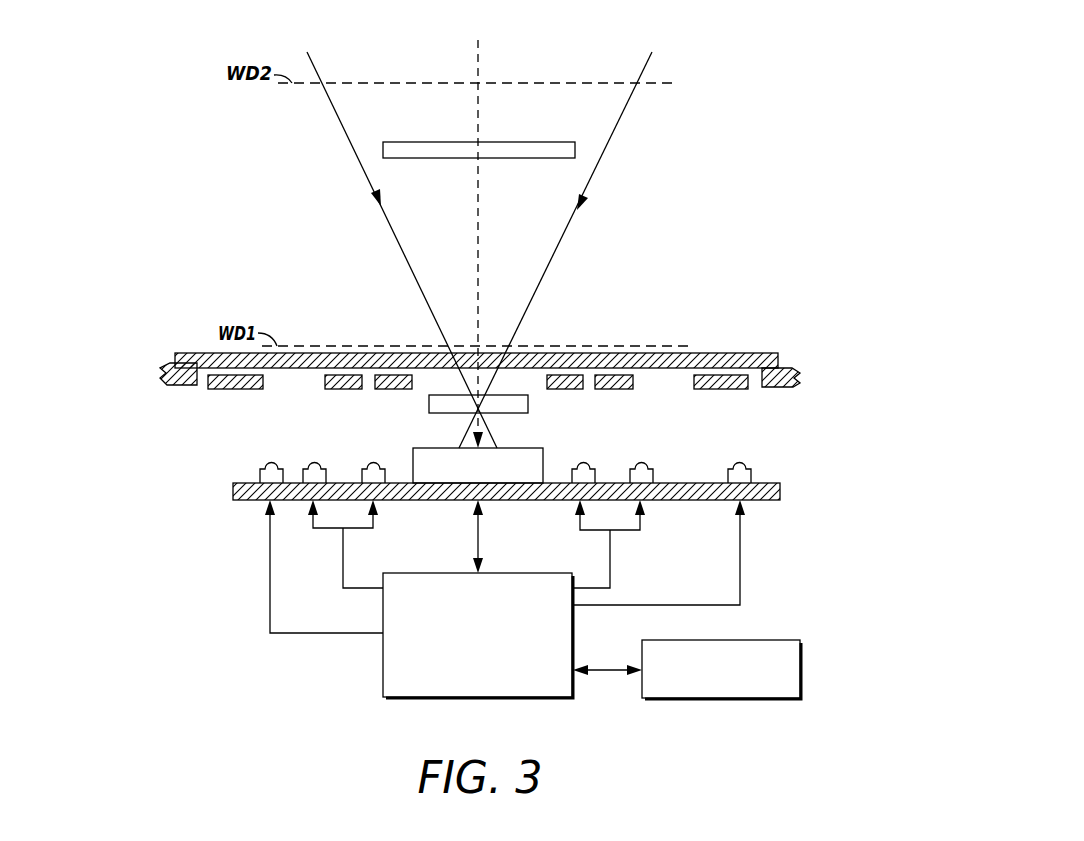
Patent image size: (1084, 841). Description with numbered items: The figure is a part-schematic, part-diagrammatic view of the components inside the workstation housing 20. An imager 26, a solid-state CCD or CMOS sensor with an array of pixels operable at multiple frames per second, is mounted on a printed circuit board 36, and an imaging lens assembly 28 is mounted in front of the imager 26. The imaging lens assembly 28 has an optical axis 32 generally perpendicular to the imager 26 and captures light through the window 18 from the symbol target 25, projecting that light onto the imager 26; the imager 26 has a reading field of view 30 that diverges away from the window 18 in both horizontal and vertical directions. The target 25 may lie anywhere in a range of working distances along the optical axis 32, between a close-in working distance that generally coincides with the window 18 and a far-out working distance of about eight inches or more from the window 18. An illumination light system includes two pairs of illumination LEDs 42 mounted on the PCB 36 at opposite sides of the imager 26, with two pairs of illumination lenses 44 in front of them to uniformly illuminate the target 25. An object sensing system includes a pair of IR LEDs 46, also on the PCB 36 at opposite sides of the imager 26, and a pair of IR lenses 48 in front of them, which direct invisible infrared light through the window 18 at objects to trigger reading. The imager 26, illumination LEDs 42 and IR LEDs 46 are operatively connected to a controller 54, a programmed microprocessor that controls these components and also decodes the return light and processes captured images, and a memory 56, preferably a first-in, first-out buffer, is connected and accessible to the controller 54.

The window 18 is at (190, 353).
The housing 20 is at (802, 372).
The symbol target 25 is at (541, 142).
The imager 26 is at (441, 448).
The imaging lens assembly 28 is at (438, 395).
The reading field of view 30 is at (619, 124).
The optical axis 32 is at (480, 58).
The printed circuit board 36 is at (780, 496).
The illumination LEDs 42 is at (643, 441).
The illumination lenses 44 is at (608, 375).
The IR LEDs 46 is at (776, 471).
The IR lenses 48 is at (738, 402).
The controller 54 is at (383, 613).
The memory 56 is at (803, 667).